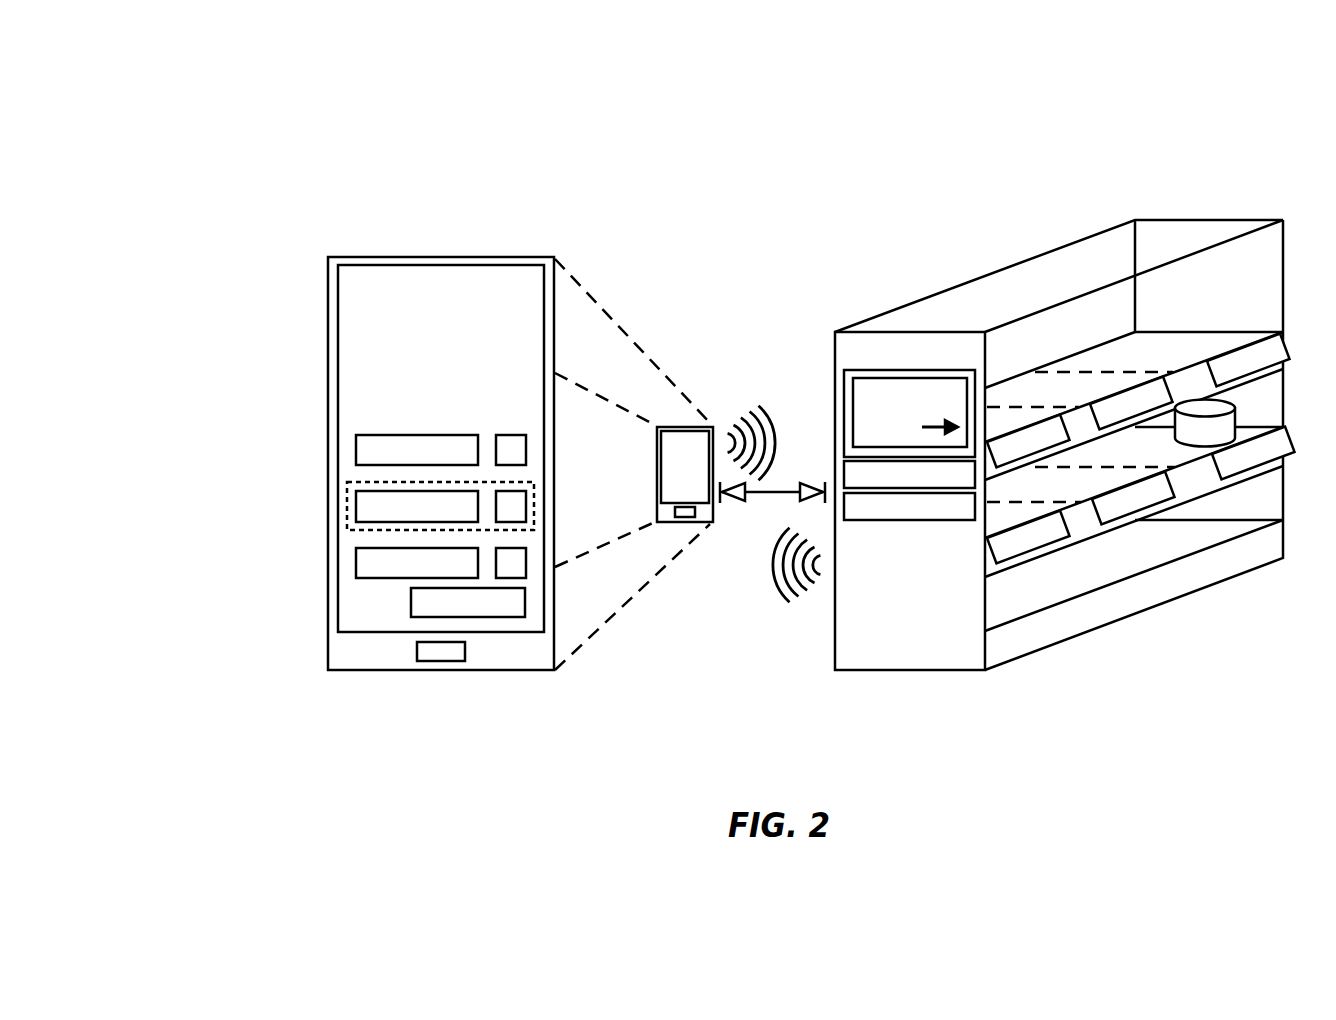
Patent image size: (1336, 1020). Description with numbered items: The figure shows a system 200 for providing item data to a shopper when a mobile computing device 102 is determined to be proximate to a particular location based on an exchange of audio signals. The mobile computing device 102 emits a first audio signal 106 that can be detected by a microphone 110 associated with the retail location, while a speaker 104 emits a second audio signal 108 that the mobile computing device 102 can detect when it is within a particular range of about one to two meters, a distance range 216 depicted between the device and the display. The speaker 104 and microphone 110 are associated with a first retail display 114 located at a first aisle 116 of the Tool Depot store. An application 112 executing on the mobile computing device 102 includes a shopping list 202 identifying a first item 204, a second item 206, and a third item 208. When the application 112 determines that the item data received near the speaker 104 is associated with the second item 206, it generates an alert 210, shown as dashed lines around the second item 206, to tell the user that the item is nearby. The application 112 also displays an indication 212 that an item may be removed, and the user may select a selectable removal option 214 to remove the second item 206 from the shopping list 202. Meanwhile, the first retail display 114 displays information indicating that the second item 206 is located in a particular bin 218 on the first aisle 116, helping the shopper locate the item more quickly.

The system 200 is at (150, 111).
The application 112 is at (362, 309).
The shopping list 202 is at (505, 337).
The mobile computing device 102 is at (683, 426).
The first audio signal 106 is at (747, 399).
The first retail display 114 is at (1018, 445).
The first aisle 116 is at (968, 363).
The speaker 104 is at (970, 484).
The microphone 110 is at (908, 520).
The second audio signal 108 is at (791, 606).
The first item 204 is at (356, 447).
The second item 206 is at (356, 505).
The third item 208 is at (356, 562).
The alert 210 is at (350, 497).
The indication 212 is at (543, 416).
The selectable removal option 214 is at (525, 598).
The distance range 216 is at (765, 510).
The bin 218 is at (1280, 465).